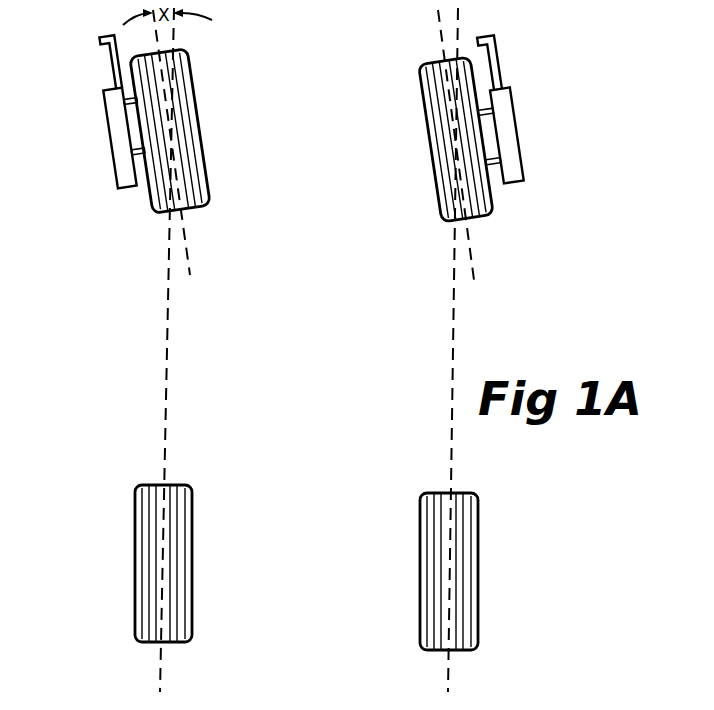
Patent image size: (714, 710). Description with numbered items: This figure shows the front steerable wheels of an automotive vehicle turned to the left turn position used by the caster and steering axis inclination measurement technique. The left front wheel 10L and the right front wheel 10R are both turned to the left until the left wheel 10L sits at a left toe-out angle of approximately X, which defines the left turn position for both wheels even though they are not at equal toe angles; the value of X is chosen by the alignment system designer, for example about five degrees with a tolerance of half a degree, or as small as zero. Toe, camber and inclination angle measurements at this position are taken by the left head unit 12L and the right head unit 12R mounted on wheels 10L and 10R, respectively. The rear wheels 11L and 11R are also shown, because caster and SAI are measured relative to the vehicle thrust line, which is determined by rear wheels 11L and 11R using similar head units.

The left front wheel 10L is at (194, 67).
The right front wheel 10R is at (424, 131).
The left rear wheel 11L is at (135, 570).
The right rear wheel 11R is at (478, 577).
The left head unit 12L is at (117, 176).
The right head unit 12R is at (522, 135).